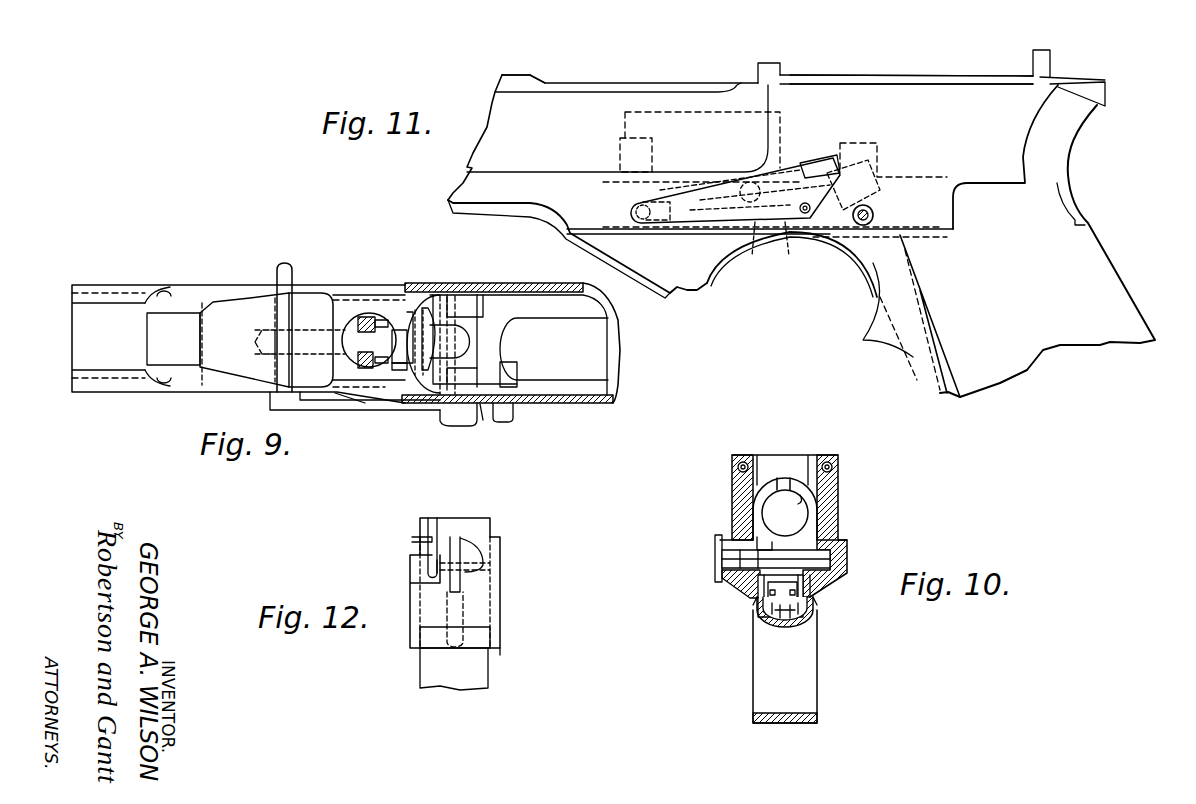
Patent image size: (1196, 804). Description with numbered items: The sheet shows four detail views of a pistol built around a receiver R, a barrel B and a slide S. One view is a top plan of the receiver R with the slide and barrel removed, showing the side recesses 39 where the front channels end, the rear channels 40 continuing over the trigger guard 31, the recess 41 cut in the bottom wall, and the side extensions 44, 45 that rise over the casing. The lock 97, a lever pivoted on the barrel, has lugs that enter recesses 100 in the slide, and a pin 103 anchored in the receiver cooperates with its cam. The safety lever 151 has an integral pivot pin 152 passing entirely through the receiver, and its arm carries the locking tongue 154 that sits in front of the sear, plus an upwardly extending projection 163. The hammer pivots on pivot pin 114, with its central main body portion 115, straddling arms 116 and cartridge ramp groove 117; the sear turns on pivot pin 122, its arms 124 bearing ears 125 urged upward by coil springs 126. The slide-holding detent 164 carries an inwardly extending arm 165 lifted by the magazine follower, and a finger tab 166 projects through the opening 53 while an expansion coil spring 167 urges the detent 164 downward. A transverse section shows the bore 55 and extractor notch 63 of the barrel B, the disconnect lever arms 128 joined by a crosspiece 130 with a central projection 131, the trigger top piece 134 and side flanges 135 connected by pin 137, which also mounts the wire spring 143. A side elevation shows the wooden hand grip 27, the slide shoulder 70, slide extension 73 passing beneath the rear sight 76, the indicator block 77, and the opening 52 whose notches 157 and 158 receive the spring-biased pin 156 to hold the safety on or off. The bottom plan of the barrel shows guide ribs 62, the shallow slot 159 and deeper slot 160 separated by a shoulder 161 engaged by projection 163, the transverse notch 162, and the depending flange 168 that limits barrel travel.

In FIG. 11, the slide S is at (518, 52).
In FIG. 11, the receiver R is at (1064, 376).
In FIG. 12, the barrel B is at (507, 663).
In FIG. 11, the wooden hand grip 27 is at (1138, 318).
In FIG. 10, the trigger guard 31 is at (770, 724).
In FIG. 9, the side recesses 39 is at (164, 383).
In FIG. 10, the rear channels 40 is at (848, 568).
In FIG. 9, the recess 41 is at (213, 302).
In FIG. 9, the side extension 44 is at (513, 285).
In FIG. 11, the side extension 45 is at (950, 90).
In FIG. 9, the side extension 45 is at (575, 402).
In FIG. 11, the opening 52 is at (757, 246).
In FIG. 11, the opening 53 is at (838, 240).
In FIG. 10, the bore 55 is at (805, 503).
In FIG. 12, the guide ribs 62 is at (500, 600).
In FIG. 10, the notch 63 is at (785, 478).
In FIG. 11, the shoulder 70 is at (540, 78).
In FIG. 11, the slide extension 73 is at (870, 75).
In FIG. 11, the rear sight 76 is at (1050, 65).
In FIG. 11, the block 77 is at (760, 74).
In FIG. 9, the lock 97 is at (240, 315).
In FIG. 11, the recesses 100 is at (618, 145).
In FIG. 9, the pin 103 is at (303, 312).
In FIG. 9, the pivot pin 114 is at (455, 284).
In FIG. 9, the central main body portion 115 is at (462, 318).
In FIG. 9, the arms 116 is at (477, 382).
In FIG. 9, the groove 117 is at (470, 333).
In FIG. 11, the pivot pin 122 is at (799, 244).
In FIG. 9, the pivot pin 122 is at (412, 280).
In FIG. 9, the arms 124 is at (405, 312).
In FIG. 10, the arms 124 is at (757, 603).
In FIG. 9, the ears 125 is at (380, 318).
In FIG. 9, the coil springs 126 is at (368, 405).
In FIG. 10, the arms 128 is at (770, 590).
In FIG. 10, the crosspiece 130 is at (825, 597).
In FIG. 10, the projection 131 is at (750, 588).
In FIG. 10, the top piece 134 is at (783, 622).
In FIG. 10, the side flanges 135 is at (815, 612).
In FIG. 10, the pin 137 is at (788, 620).
In FIG. 10, the wire spring 143 is at (845, 590).
In FIG. 11, the safety lever 151 is at (700, 190).
In FIG. 9, the safety lever 151 is at (336, 411).
In FIG. 10, the safety lever 151 is at (722, 562).
In FIG. 11, the pivot pin 152 is at (635, 207).
In FIG. 9, the pivot pin 152 is at (292, 268).
In FIG. 9, the locking tongue 154 is at (397, 340).
In FIG. 10, the locking tongue 154 is at (840, 532).
In FIG. 10, the spring-biased pin 156 is at (722, 554).
In FIG. 11, the notch 157 is at (804, 160).
In FIG. 11, the notch 158 is at (826, 155).
In FIG. 12, the shallow slot 159 is at (425, 560).
In FIG. 12, the deeper slot 160 is at (435, 520).
In FIG. 12, the shoulder 161 is at (455, 535).
In FIG. 12, the transverse notch 162 is at (425, 548).
In FIG. 9, the projection 163 is at (400, 370).
In FIG. 10, the projection 163 is at (765, 550).
In FIG. 11, the slide-holding detent 164 is at (872, 178).
In FIG. 9, the slide-holding detent 164 is at (486, 408).
In FIG. 9, the arm 165 is at (514, 362).
In FIG. 11, the finger tab 166 is at (875, 216).
In FIG. 9, the finger tab 166 is at (512, 415).
In FIG. 11, the expansion coil spring 167 is at (878, 197).
In FIG. 12, the flange 168 is at (482, 637).